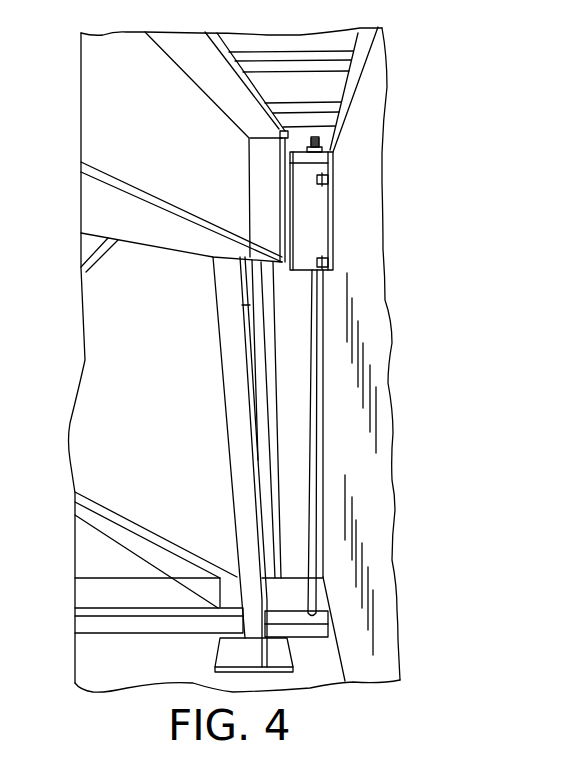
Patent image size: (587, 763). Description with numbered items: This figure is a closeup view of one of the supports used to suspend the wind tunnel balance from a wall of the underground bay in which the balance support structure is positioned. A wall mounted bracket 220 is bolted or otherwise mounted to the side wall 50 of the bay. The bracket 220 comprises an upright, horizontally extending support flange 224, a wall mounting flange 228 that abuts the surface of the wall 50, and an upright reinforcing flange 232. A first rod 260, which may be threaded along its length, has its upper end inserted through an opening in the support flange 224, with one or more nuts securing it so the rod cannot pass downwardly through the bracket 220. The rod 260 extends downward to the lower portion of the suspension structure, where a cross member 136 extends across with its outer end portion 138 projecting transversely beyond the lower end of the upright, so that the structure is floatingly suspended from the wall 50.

The side wall 50 is at (372, 391).
The cross member 136 is at (139, 622).
The outer end portion 138 is at (310, 630).
The wall mounted bracket 220 is at (395, 197).
The support flange 224 is at (336, 158).
The wall mounting flange 228 is at (333, 247).
The reinforcing flange 232 is at (312, 218).
The first rod 260 is at (315, 368).